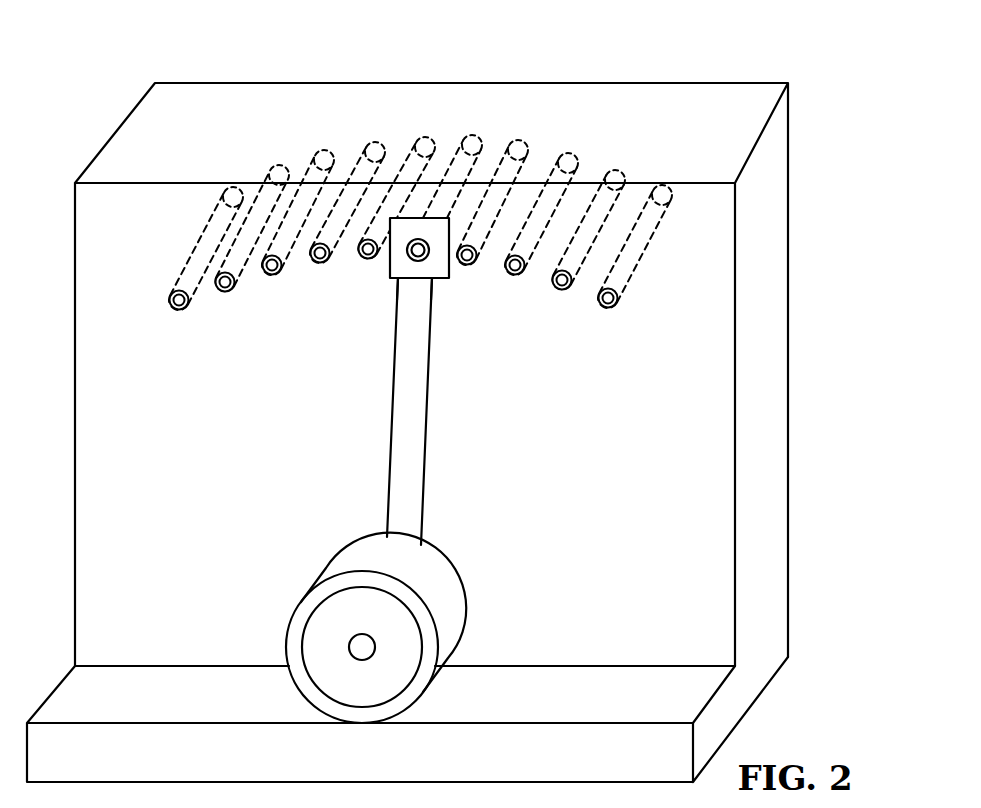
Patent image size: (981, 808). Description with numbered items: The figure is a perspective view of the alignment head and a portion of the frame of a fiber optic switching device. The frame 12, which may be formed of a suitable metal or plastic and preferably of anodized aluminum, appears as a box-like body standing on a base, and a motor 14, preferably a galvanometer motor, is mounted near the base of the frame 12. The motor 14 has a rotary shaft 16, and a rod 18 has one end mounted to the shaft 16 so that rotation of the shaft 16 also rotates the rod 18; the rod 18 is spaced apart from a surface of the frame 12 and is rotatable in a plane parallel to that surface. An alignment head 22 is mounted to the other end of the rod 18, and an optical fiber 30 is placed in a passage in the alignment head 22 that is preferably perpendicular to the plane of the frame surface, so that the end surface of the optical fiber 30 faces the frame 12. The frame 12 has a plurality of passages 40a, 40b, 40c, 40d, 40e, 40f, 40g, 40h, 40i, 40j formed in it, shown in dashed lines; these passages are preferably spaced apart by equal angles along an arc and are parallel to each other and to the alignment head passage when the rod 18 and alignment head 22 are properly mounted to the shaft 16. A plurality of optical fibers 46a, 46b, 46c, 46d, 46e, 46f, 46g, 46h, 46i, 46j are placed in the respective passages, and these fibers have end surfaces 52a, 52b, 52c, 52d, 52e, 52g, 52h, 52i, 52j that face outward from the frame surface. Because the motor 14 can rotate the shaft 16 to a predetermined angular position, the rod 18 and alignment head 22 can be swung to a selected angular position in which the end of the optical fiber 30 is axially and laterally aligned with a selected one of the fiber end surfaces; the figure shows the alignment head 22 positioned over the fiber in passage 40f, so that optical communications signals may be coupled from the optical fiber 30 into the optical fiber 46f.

The frame 12 is at (793, 505).
The motor 14 is at (290, 674).
The rotary shaft 16 is at (348, 646).
The rod 18 is at (430, 403).
The alignment head 22 is at (412, 280).
The optical fiber 30 is at (420, 262).
The passage 40a is at (200, 278).
The passage 40b is at (228, 257).
The passage 40c is at (290, 248).
The passage 40d is at (340, 230).
The passage 40e is at (368, 158).
The passage 40f is at (418, 158).
The passage 40g is at (505, 178).
The passage 40h is at (527, 223).
The passage 40i is at (632, 205).
The passage 40j is at (625, 258).
The optical fiber 46a is at (180, 287).
The optical fiber 46b is at (232, 193).
The optical fiber 46c is at (275, 178).
The optical fiber 46d is at (318, 165).
The optical fiber 46e is at (389, 158).
The optical fiber 46f is at (455, 160).
The optical fiber 46g is at (500, 160).
The optical fiber 46h is at (548, 218).
The optical fiber 46i is at (583, 213).
The optical fiber 46j is at (648, 240).
The fiber end surface 52a is at (178, 308).
The fiber end surface 52b is at (225, 291).
The fiber end surface 52c is at (272, 275).
The fiber end surface 52d is at (319, 263).
The fiber end surface 52e is at (368, 259).
The fiber end surface 52g is at (468, 265).
The fiber end surface 52h is at (517, 275).
The fiber end surface 52i is at (565, 290).
The fiber end surface 52j is at (617, 301).